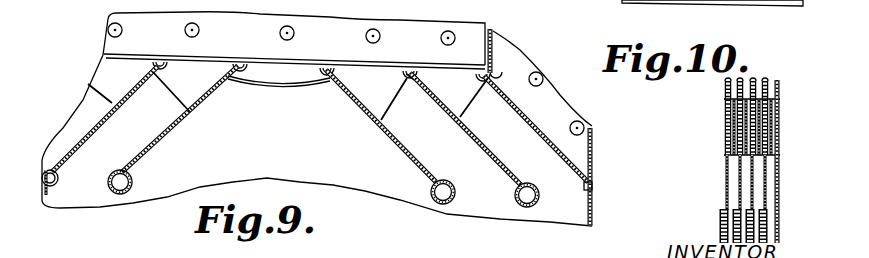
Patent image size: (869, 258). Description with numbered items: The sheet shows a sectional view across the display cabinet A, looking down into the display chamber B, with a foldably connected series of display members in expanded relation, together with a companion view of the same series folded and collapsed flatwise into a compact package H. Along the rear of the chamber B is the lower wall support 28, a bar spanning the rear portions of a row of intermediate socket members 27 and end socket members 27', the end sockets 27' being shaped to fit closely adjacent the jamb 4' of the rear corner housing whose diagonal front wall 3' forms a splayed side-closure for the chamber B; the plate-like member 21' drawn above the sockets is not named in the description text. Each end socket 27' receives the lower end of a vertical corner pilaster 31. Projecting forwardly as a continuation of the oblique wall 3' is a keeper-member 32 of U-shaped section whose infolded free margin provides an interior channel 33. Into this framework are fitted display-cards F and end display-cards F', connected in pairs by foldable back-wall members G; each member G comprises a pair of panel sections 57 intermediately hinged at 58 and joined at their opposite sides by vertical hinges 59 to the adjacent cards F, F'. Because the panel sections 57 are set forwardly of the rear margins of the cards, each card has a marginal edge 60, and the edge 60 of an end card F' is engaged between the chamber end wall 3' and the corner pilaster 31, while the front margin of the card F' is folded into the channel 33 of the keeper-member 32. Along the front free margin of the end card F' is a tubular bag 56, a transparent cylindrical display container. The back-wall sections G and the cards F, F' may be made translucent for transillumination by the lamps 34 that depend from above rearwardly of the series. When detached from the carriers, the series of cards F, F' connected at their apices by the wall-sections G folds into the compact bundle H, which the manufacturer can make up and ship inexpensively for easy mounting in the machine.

In FIG. 9, the top plate 21' is at (294, 32).
In FIG. 9, the lamp 34 is at (285, 26).
In FIG. 9, the lower wall support 28 is at (255, 58).
In FIG. 9, the vertical hinge 59 is at (215, 86).
In FIG. 9, the display cabinet A is at (82, 105).
In FIG. 9, the display chamber B is at (317, 184).
In FIG. 9, the foldable back-wall member G is at (262, 84).
In FIG. 10, the foldable back-wall member G is at (750, 127).
In FIG. 9, the display-card F is at (286, 125).
In FIG. 10, the display-card F is at (725, 199).
In FIG. 9, the end display-card F' is at (536, 129).
In FIG. 10, the end display-card F' is at (788, 161).
In FIG. 9, the tubular bag 56 is at (107, 185).
In FIG. 9, the marginal edge 60 is at (421, 58).
In FIG. 9, the corner pilaster 31 is at (485, 66).
In FIG. 9, the jamb 4' is at (477, 39).
In FIG. 9, the end socket member 27' is at (469, 81).
In FIG. 10, the end socket member 27' is at (704, 12).
In FIG. 9, the intermediate socket member 27 is at (386, 73).
In FIG. 9, the intermediate vertical hinge 58 is at (386, 116).
In FIG. 9, the panel section 57 is at (448, 102).
In FIG. 9, the front wall of housing 3' is at (543, 78).
In FIG. 9, the interior channel 33 is at (583, 187).
In FIG. 9, the keeper-member 32 is at (584, 203).
In FIG. 10, the compact package H is at (723, 155).